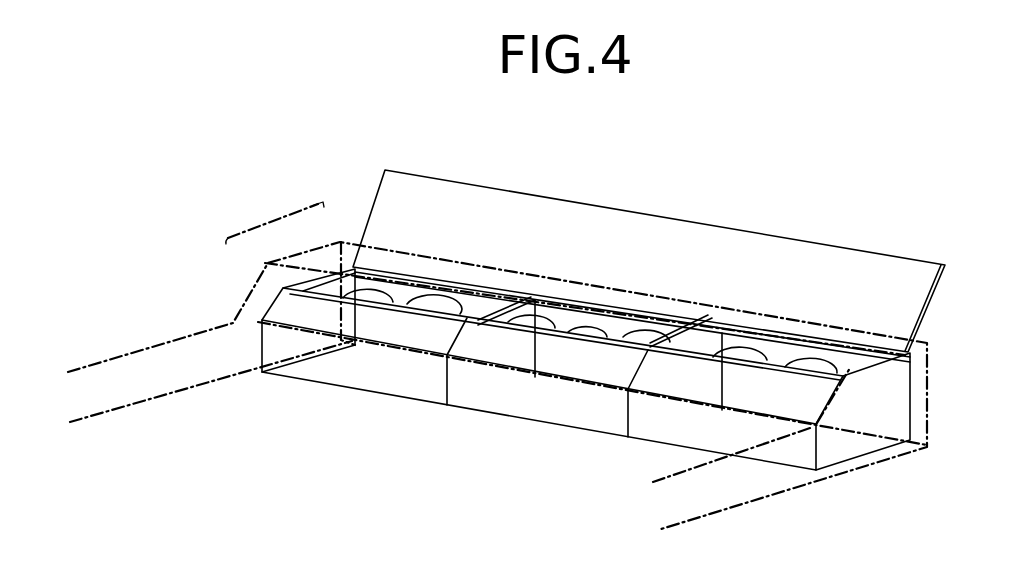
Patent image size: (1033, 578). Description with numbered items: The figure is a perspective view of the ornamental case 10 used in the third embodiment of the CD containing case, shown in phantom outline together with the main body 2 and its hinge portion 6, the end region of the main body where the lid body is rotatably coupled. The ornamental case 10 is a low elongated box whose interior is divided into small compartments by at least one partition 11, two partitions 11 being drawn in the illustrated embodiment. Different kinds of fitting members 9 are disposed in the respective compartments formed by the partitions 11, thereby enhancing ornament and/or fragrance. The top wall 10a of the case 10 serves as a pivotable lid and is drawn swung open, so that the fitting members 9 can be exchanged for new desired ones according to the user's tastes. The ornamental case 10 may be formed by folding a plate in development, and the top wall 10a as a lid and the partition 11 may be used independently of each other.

The main body 2 is at (162, 320).
The hinge portion 6 is at (273, 218).
The fitting members 9 is at (437, 292).
The ornamental case 10 is at (496, 428).
The top wall 10a is at (872, 272).
The partition 11 is at (502, 297).